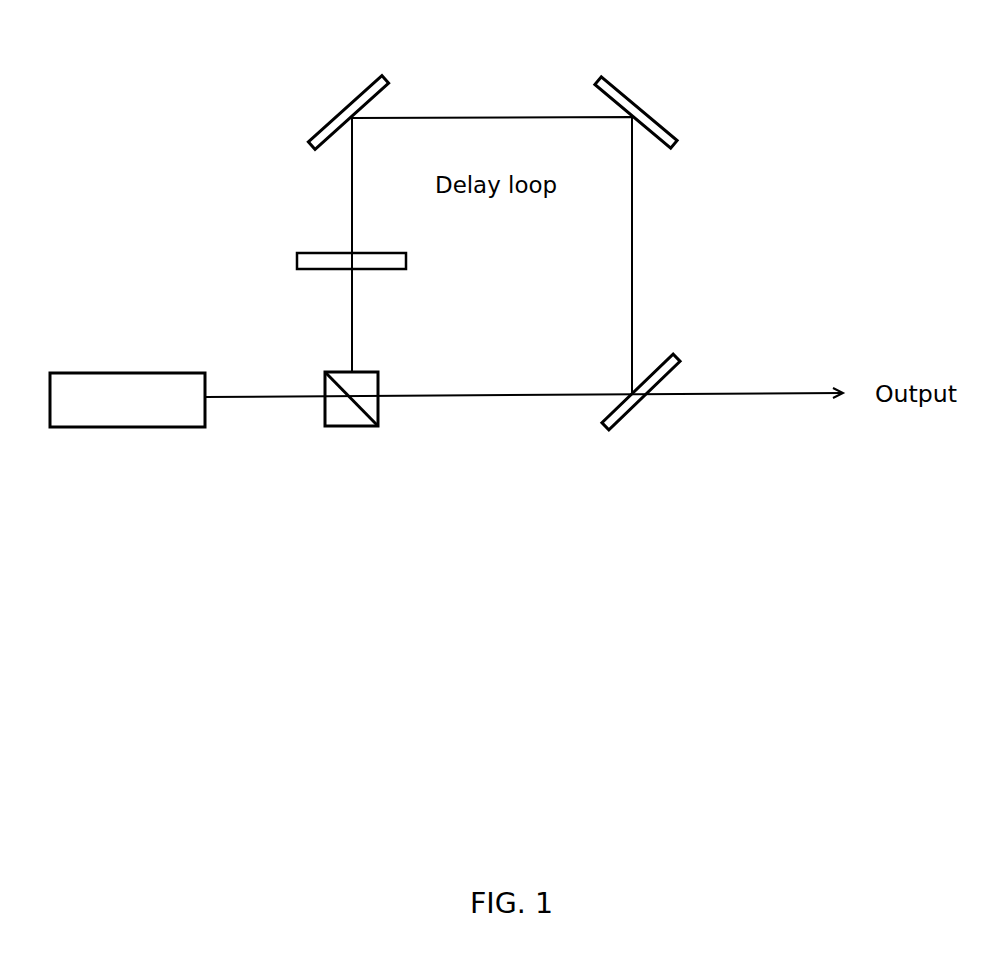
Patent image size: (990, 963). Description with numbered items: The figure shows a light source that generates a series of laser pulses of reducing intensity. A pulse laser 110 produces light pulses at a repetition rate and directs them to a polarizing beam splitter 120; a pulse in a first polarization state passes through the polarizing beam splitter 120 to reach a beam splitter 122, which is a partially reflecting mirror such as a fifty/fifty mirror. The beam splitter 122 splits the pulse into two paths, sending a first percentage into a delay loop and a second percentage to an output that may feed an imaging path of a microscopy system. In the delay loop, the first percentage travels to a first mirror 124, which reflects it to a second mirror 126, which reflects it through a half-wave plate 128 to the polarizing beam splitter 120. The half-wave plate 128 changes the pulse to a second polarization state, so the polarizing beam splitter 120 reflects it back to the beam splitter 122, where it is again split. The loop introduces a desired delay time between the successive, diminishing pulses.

The pulse laser 110 is at (119, 361).
The polarizing beam splitter 120 is at (308, 367).
The beam splitter 122 is at (682, 331).
The first mirror 124 is at (594, 67).
The second mirror 126 is at (387, 64).
The half-wave plate 128 is at (289, 243).